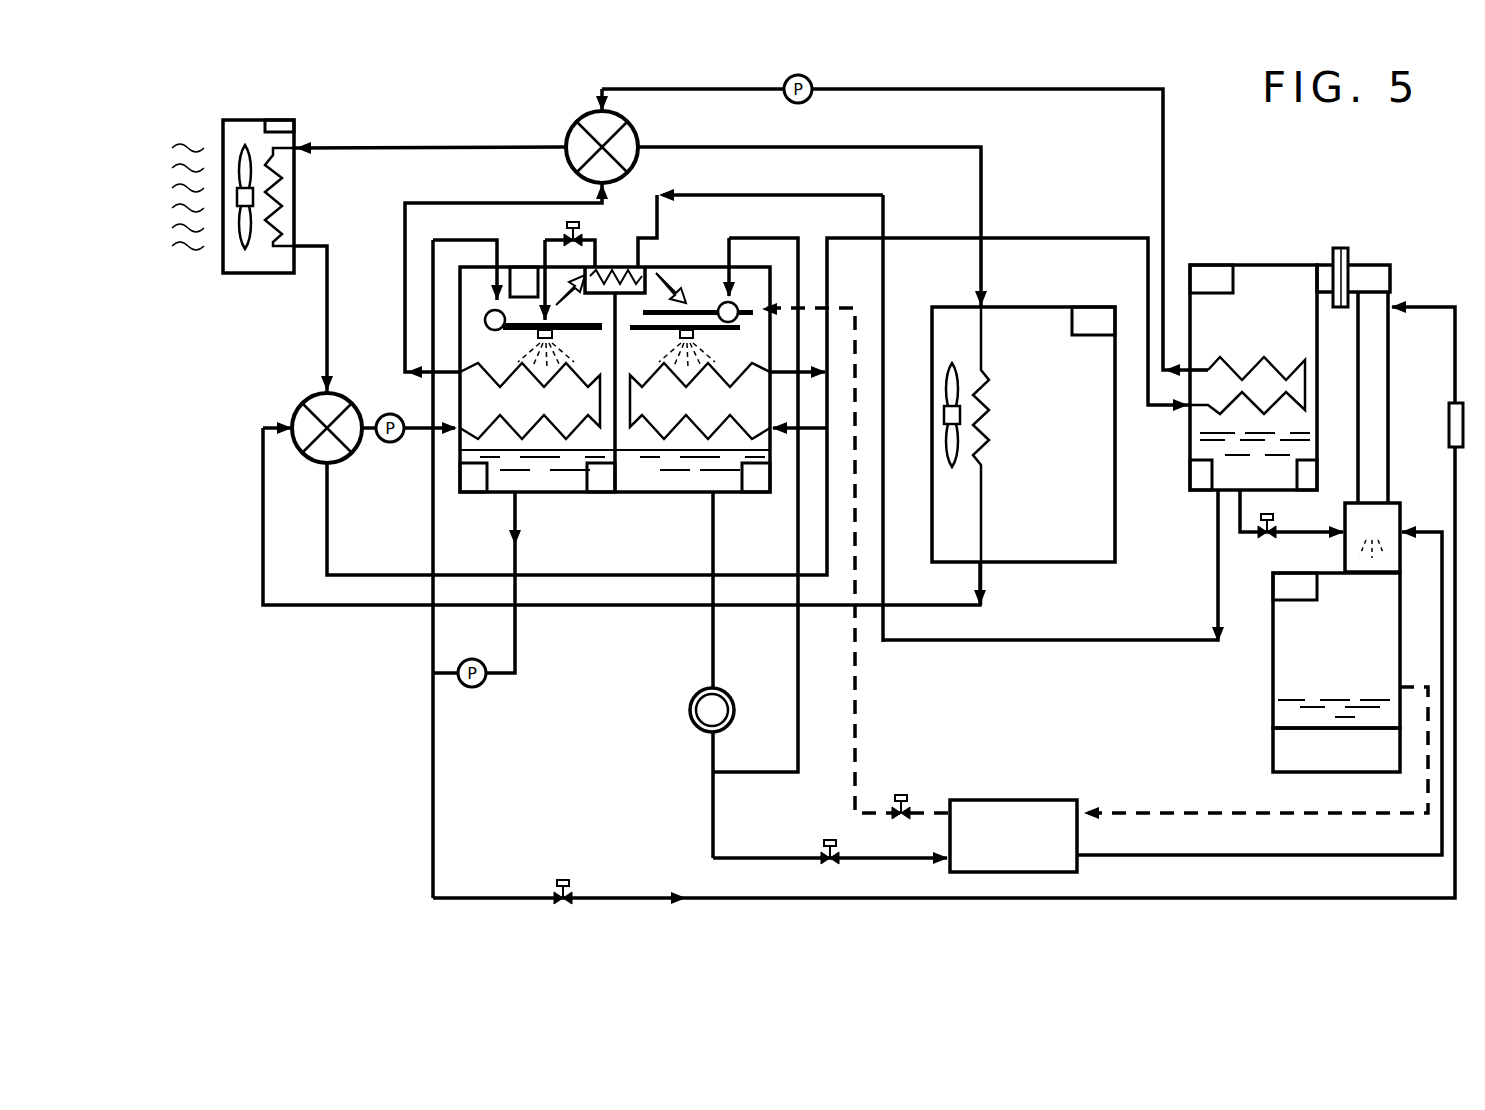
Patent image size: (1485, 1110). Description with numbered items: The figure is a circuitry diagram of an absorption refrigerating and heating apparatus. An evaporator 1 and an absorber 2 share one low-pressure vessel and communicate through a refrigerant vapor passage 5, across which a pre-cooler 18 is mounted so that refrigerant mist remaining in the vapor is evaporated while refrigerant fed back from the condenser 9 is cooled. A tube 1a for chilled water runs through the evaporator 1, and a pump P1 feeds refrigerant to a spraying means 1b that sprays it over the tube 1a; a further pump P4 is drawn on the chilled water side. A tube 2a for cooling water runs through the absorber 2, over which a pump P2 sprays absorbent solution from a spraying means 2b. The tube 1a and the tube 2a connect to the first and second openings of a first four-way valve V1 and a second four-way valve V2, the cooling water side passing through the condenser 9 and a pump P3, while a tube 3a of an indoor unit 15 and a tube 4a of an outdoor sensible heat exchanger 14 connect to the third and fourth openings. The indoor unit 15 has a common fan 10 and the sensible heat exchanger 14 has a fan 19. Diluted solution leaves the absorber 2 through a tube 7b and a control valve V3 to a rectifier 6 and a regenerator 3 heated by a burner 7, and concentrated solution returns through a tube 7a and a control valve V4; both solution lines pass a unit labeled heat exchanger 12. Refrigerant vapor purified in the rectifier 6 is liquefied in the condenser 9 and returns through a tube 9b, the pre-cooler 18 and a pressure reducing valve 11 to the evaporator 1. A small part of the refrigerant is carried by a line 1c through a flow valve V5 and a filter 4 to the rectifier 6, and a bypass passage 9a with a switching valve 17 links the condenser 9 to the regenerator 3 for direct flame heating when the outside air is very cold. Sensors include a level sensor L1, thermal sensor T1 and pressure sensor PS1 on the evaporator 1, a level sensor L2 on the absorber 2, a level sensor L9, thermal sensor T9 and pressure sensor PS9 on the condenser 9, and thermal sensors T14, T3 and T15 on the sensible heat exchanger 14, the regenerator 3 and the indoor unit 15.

The evaporator 1 is at (472, 359).
The tube 1a is at (415, 203).
The spraying means 1b is at (484, 322).
The solution line 1c is at (433, 797).
The absorber 2 is at (748, 296).
The tube 2a is at (933, 237).
The spraying means 2b is at (718, 302).
The regenerator 3 is at (1272, 657).
The tube 3a is at (407, 147).
The filter 4 is at (1448, 430).
The tube 4a is at (864, 149).
The vapor passage 5 is at (618, 266).
The rectifier 6 is at (1398, 514).
The burner 7 is at (1273, 752).
The tube 7a is at (860, 762).
The tube 7b is at (712, 842).
The condenser 9 is at (1274, 276).
The refrigerant line 9a is at (1314, 532).
The tube 9b is at (1010, 658).
The fan 10 is at (238, 273).
The pressure reducing valve 11 is at (580, 238).
The heat exchanger 12 is at (1010, 798).
The sensible heat exchanger 14 is at (1115, 551).
The indoor unit 15 is at (288, 274).
The switching valve 17 is at (1268, 542).
The pre-cooler 18 is at (662, 272).
The fan 19 is at (954, 475).
The first four-way valve V1 is at (561, 119).
The second four-way valve V2 is at (292, 398).
The control valve V3 is at (820, 848).
The control valve V4 is at (912, 800).
The flow valve V5 is at (558, 882).
The pump P1 is at (481, 688).
The pump P2 is at (712, 675).
The pump P3 is at (812, 95).
The pump P4 is at (388, 442).
The pressure sensor PS1 is at (530, 264).
The pressure sensor PS9 is at (1205, 274).
The thermal sensor T1 is at (608, 494).
The thermal sensor T3 is at (1316, 587).
The thermal sensor T9 is at (1190, 483).
The thermal sensor T14 is at (1092, 316).
The thermal sensor T15 is at (292, 122).
The level sensor L1 is at (474, 494).
The level sensor L2 is at (758, 494).
The level sensor L9 is at (1306, 490).